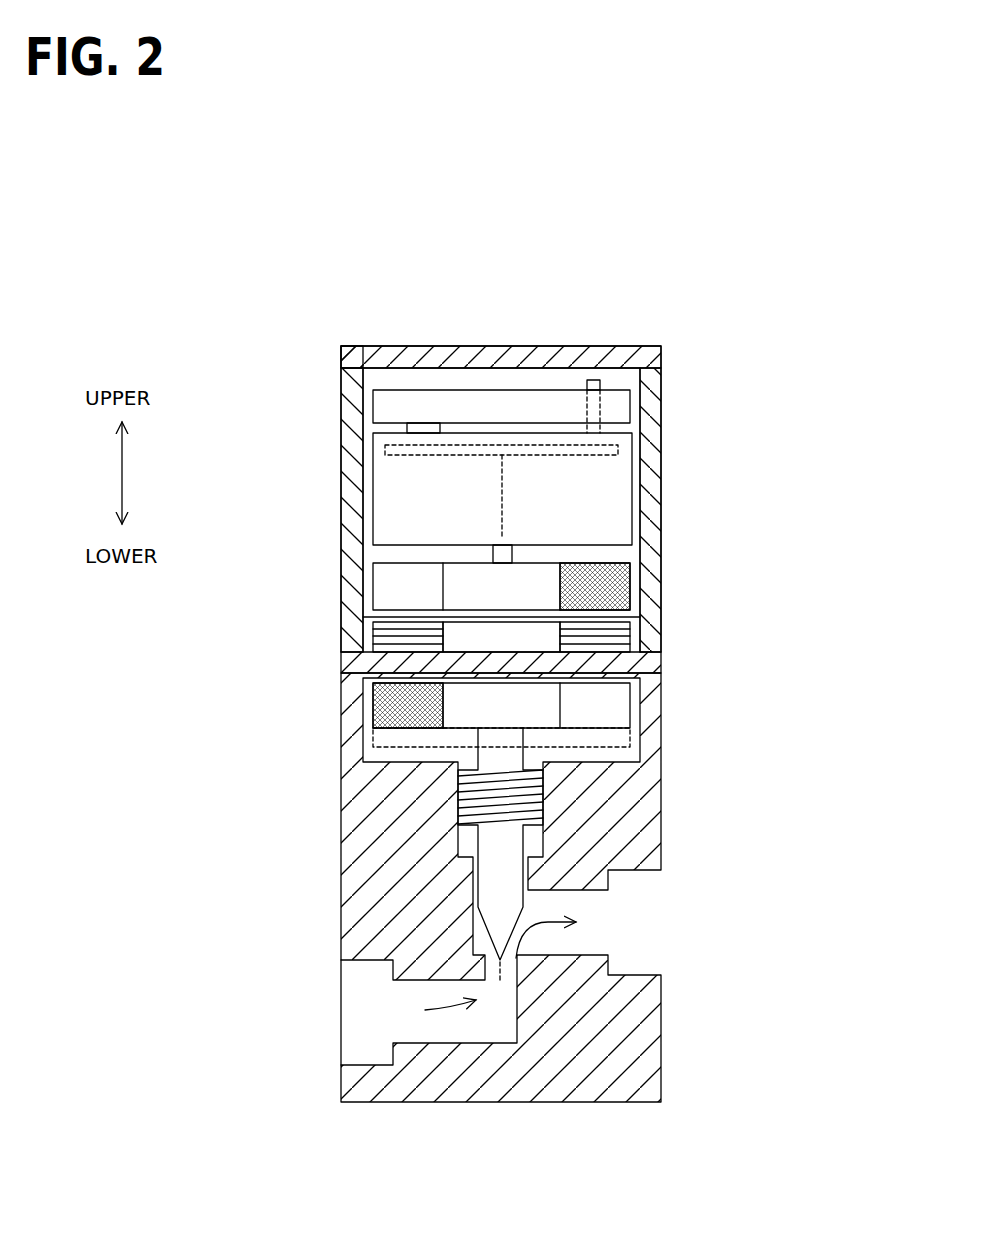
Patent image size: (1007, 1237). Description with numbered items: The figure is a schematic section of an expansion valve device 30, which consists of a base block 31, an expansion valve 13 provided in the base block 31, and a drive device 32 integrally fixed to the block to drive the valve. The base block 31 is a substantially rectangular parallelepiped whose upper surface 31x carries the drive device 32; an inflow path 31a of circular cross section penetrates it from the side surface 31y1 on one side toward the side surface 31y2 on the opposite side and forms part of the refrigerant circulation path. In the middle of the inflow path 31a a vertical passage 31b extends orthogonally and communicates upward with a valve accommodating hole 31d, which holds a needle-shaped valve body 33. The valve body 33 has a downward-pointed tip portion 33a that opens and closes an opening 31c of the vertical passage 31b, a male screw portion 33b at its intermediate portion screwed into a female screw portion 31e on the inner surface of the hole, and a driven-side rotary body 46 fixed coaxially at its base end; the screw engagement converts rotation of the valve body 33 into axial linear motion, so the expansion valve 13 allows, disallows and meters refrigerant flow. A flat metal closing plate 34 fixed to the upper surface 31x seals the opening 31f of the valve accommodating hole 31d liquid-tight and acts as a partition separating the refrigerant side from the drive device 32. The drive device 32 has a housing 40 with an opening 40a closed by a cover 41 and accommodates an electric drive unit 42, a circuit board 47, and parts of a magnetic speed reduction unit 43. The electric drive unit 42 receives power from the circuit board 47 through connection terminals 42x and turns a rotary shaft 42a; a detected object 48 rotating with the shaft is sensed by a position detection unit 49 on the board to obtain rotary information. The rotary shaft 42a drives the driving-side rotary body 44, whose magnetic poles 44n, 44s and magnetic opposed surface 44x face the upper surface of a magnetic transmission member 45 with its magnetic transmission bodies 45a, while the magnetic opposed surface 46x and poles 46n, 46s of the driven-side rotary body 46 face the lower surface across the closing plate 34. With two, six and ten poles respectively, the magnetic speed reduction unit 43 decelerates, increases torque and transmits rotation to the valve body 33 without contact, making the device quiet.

The expansion valve device 30 is at (721, 323).
The expansion valve 13 is at (466, 876).
The base block 31 is at (661, 812).
The inflow path 31a is at (396, 1029).
The vertical passage 31b is at (478, 909).
The opening 31c is at (492, 956).
The valve accommodating hole 31d is at (468, 831).
The female screw portion 31e is at (466, 780).
The opening 31f is at (383, 683).
The upper surface 31x is at (345, 672).
The side surface 31y1 is at (342, 866).
The side surface 31y2 is at (661, 990).
The drive device 32 is at (661, 460).
The valve body 33 is at (528, 886).
The tip portion 33a is at (512, 968).
The male screw portion 33b is at (545, 786).
The closing plate 34 is at (345, 665).
The housing 40 is at (341, 400).
The opening 40a is at (378, 380).
The cover 41 is at (508, 346).
The electric drive unit 42 is at (632, 497).
The rotary shaft 42a is at (496, 552).
The connection terminals 42x is at (595, 380).
The magnetic speed reduction unit 43 is at (776, 543).
The driving-side rotary body 44 is at (631, 573).
The magnetic pole 44n is at (383, 609).
The magnetic pole 44s is at (631, 609).
The magnetic opposed surface 44x is at (501, 587).
The magnetic transmission member 45 is at (631, 638).
The magnetic transmission bodies 45a is at (375, 627).
The driven-side rotary body 46 is at (641, 716).
The magnetic pole 46n is at (631, 695).
The magnetic pole 46s is at (407, 721).
The magnetic opposed surface 46x is at (501, 705).
The circuit board 47 is at (465, 393).
The detected object 48 is at (585, 454).
The position detection unit 49 is at (421, 434).